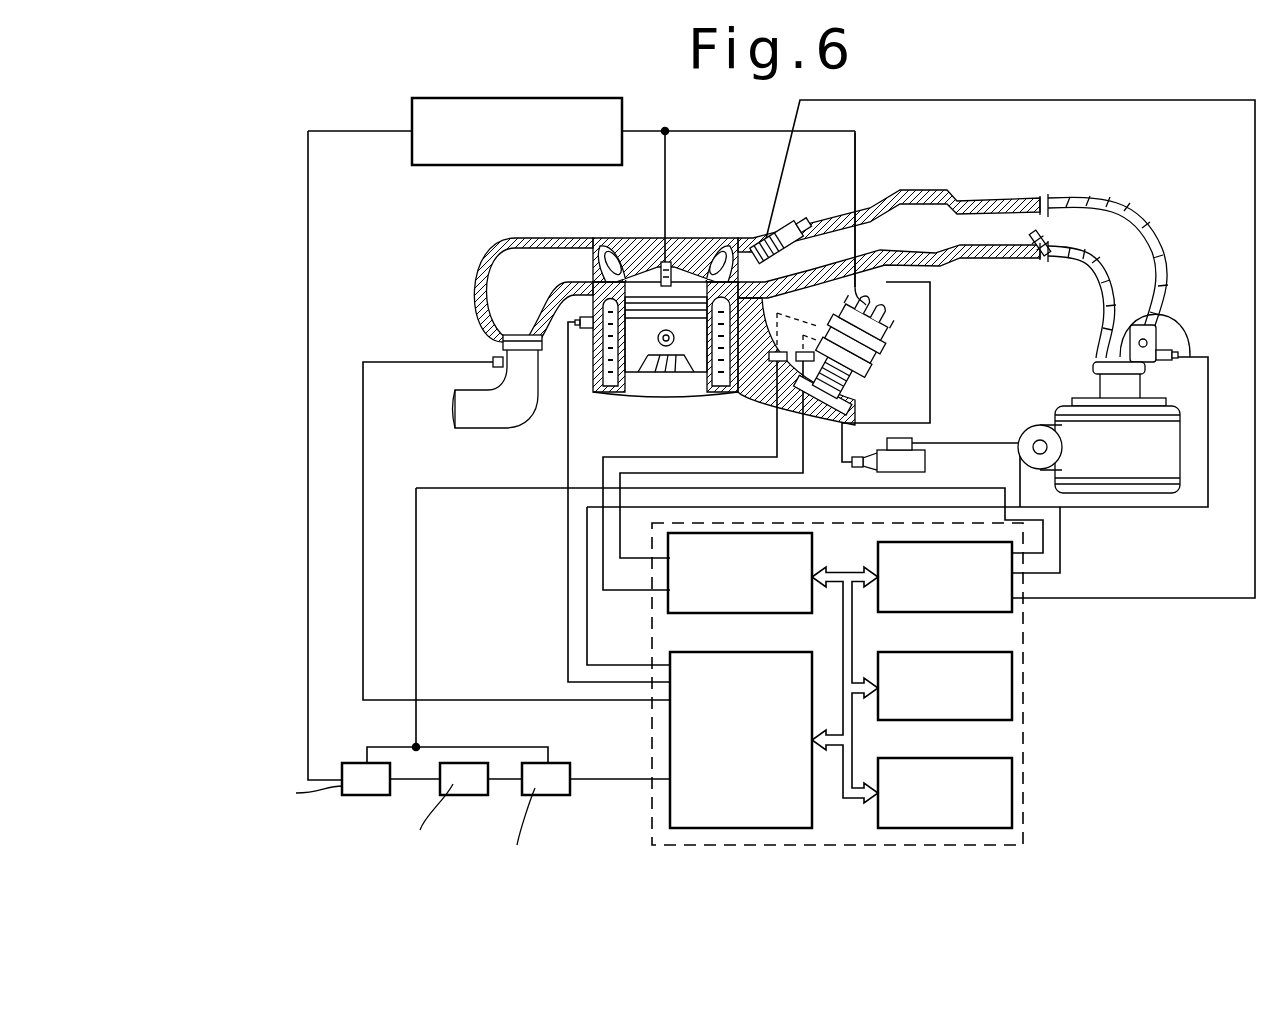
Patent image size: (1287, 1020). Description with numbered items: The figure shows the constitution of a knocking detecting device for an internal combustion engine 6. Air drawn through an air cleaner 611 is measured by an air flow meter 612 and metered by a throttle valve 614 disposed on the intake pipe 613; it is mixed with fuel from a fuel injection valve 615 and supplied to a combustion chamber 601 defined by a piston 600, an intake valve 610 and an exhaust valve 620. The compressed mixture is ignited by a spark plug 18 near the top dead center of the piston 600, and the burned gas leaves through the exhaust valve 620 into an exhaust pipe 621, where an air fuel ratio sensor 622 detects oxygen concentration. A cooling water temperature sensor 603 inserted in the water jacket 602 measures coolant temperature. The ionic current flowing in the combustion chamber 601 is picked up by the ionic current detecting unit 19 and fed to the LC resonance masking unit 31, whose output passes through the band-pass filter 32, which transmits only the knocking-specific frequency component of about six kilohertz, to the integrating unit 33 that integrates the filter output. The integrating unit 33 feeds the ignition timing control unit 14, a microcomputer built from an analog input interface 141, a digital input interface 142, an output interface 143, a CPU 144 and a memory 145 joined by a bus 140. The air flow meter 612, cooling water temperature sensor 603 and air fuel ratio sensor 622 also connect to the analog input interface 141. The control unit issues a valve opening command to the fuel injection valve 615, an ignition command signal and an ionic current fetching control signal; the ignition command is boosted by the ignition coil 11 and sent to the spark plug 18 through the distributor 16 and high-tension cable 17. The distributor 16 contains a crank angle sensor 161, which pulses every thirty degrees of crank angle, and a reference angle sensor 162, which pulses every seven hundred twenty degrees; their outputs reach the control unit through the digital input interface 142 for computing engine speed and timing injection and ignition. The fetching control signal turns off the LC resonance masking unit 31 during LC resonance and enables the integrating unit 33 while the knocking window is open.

The internal combustion engine 6 is at (677, 243).
The ignition coil 11 is at (935, 463).
The ignition timing control unit 14 is at (1022, 630).
The distributor 16 is at (870, 360).
The high-tension cable 17 is at (856, 170).
The spark plug 18 is at (663, 248).
The ionic current detecting unit 19 is at (410, 150).
The LC resonance masking unit 31 is at (350, 765).
The band-pass filter 32 is at (468, 786).
The integrating unit 33 is at (546, 790).
The bus 140 is at (847, 574).
The analog input interface 141 is at (745, 652).
The digital input interface 142 is at (729, 613).
The output interface 143 is at (912, 613).
The CPU 144 is at (912, 720).
The memory 145 is at (880, 816).
The crank angle sensor 161 is at (767, 385).
The reference angle sensor 162 is at (812, 362).
The piston 600 is at (695, 378).
The combustion chamber 601 is at (632, 247).
The water jacket 602 is at (612, 393).
The cooling water temperature sensor 603 is at (583, 332).
The intake valve 610 is at (733, 252).
The air cleaner 611 is at (1058, 415).
The air flow meter 612 is at (1180, 330).
The intake pipe 613 is at (1018, 197).
The throttle valve 614 is at (978, 258).
The fuel injection valve 615 is at (786, 218).
The exhaust valve 620 is at (603, 250).
The exhaust pipe 621 is at (508, 257).
The air fuel ratio sensor 622 is at (495, 358).